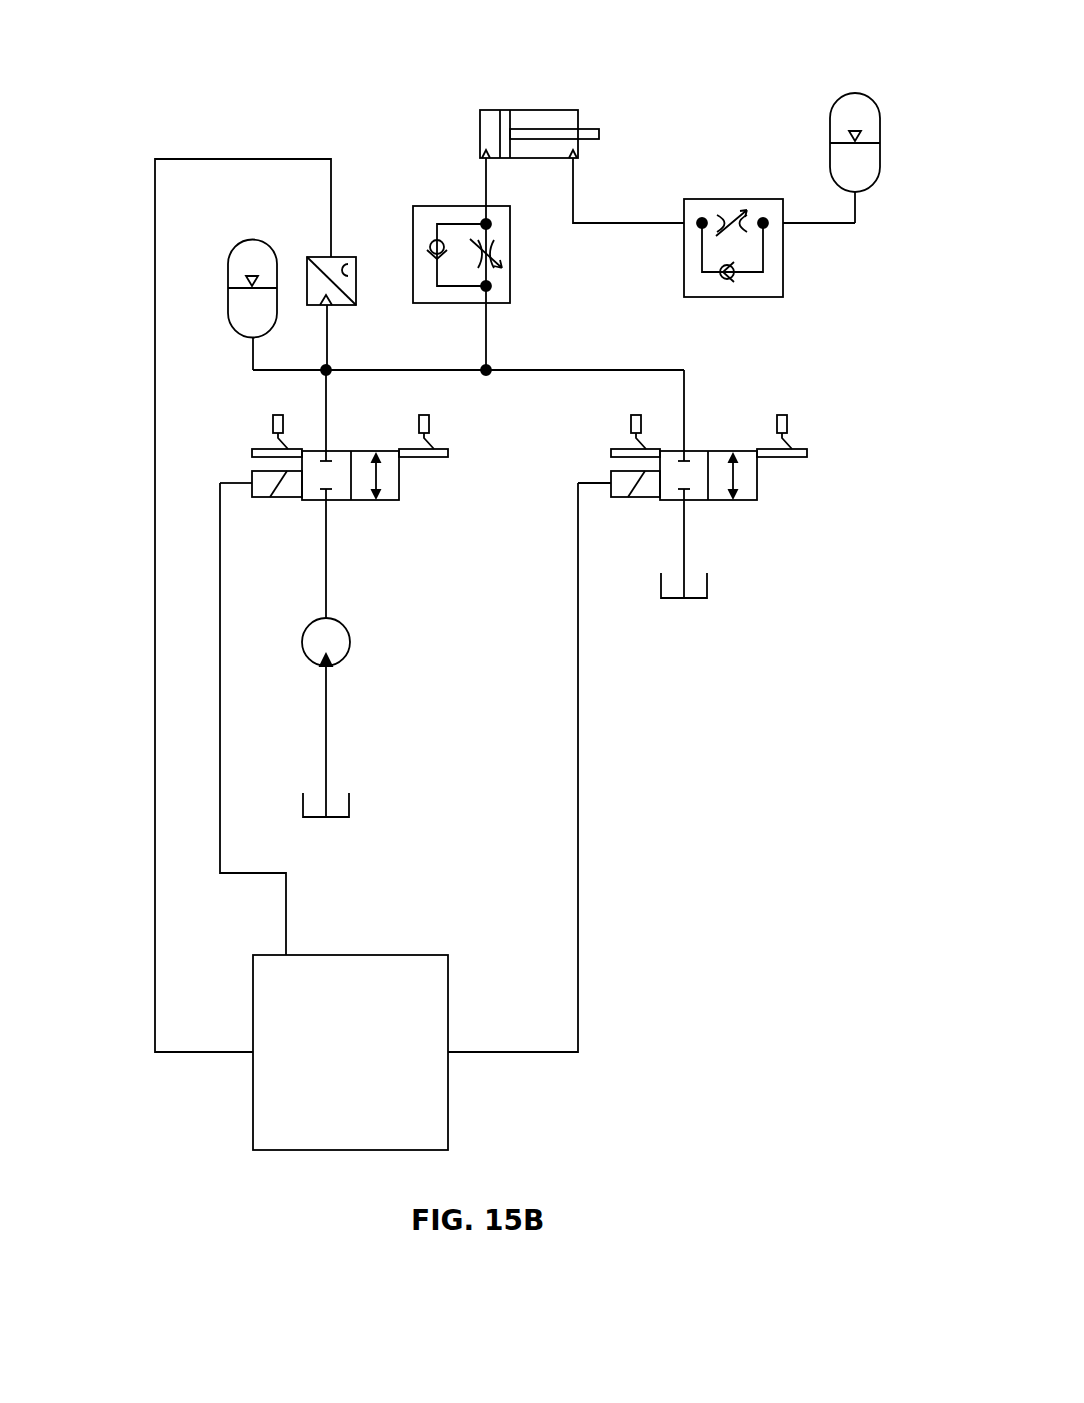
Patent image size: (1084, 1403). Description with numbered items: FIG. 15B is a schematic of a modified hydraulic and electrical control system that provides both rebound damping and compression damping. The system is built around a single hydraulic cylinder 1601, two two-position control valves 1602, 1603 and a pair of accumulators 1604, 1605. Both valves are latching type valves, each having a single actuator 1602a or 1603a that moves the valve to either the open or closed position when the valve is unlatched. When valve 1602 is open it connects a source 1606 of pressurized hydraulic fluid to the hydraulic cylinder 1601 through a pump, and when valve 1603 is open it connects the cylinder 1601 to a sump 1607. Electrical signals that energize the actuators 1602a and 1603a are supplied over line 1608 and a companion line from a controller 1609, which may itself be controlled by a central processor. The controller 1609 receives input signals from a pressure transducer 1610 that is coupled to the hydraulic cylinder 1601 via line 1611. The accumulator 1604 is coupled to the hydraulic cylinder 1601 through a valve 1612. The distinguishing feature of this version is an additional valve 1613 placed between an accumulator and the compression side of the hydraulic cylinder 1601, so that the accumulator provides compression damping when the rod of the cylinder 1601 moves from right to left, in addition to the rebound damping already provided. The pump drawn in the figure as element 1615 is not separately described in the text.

The hydraulic cylinder 1601 is at (522, 110).
The two-position control valve 1602 is at (399, 488).
The actuator 1602a is at (265, 500).
The two-position control valve 1603 is at (757, 486).
The actuator 1603a is at (623, 500).
The accumulator 1604 is at (836, 105).
The accumulator 1605 is at (228, 256).
The source of pressurized hydraulic fluid 1606 is at (349, 797).
The sump 1607 is at (707, 579).
The line 1608 is at (286, 898).
The controller 1609 is at (578, 840).
The pressure transducer 1610 is at (448, 990).
The line 1611 is at (343, 305).
The valve 1612 is at (697, 199).
The valve 1613 is at (510, 287).
The pump 1615 is at (350, 632).